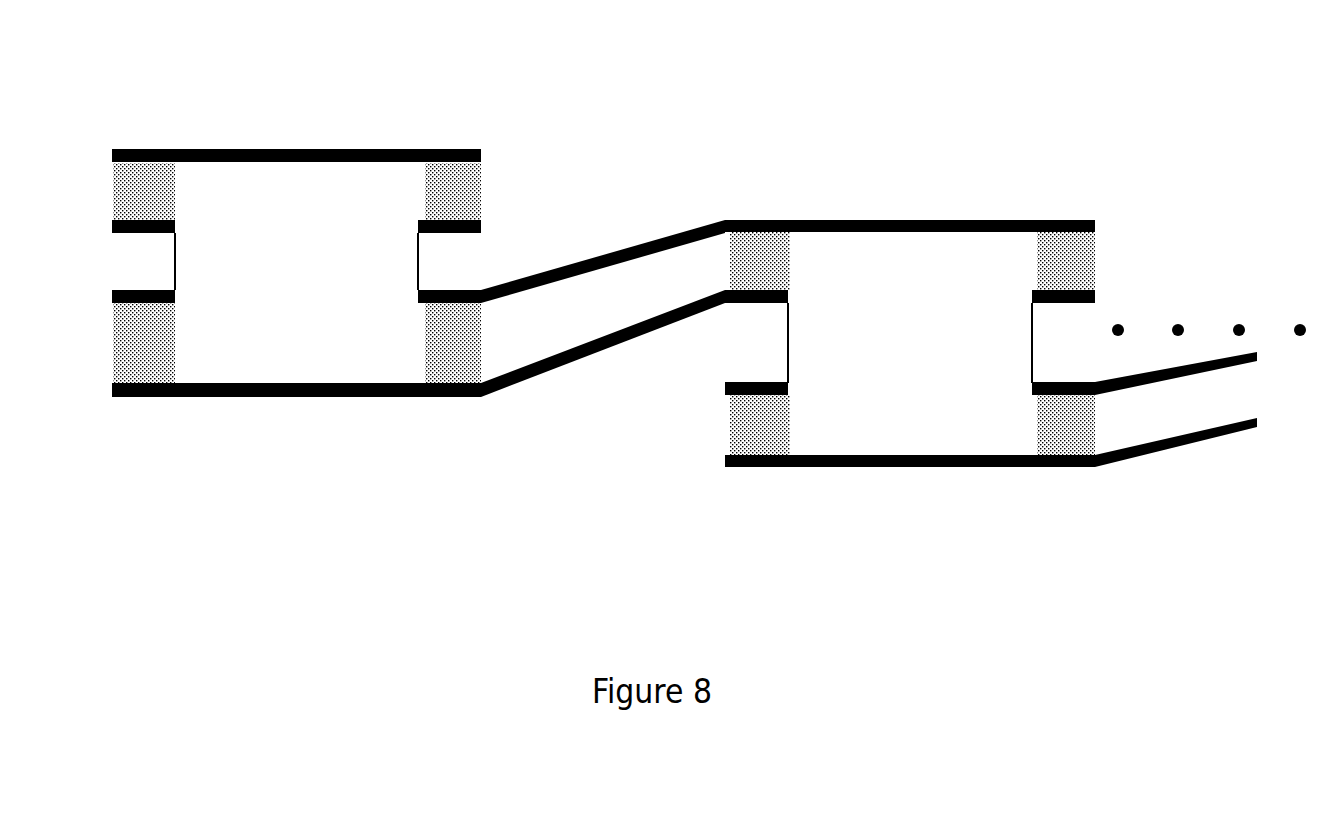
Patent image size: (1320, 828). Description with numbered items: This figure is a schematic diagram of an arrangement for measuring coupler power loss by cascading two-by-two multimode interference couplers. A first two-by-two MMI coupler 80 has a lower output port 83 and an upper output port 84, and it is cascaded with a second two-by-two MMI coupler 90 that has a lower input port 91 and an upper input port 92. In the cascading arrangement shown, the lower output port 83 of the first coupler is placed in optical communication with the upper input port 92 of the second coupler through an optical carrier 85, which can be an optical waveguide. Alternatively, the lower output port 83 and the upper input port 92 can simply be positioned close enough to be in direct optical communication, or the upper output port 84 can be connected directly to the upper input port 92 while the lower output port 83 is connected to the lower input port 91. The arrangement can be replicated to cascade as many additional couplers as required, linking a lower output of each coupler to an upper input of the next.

The first 2×2 MMI coupler 80 is at (296, 268).
The lower output port 83 is at (450, 355).
The upper output port 84 is at (452, 192).
The optical carrier 85 is at (630, 250).
The second 2×2 MMI coupler 90 is at (1015, 306).
The lower input port 91 is at (758, 430).
The upper input port 92 is at (762, 255).